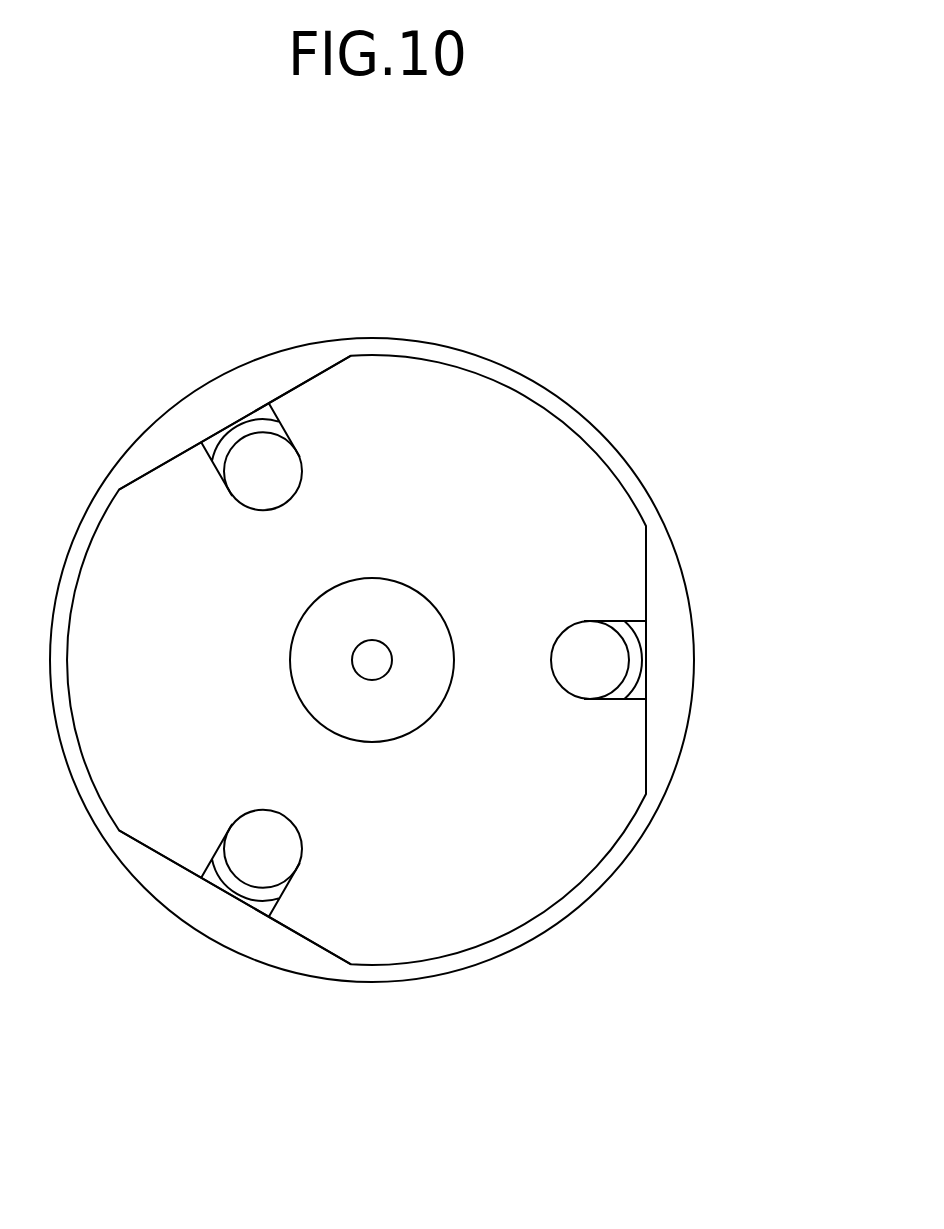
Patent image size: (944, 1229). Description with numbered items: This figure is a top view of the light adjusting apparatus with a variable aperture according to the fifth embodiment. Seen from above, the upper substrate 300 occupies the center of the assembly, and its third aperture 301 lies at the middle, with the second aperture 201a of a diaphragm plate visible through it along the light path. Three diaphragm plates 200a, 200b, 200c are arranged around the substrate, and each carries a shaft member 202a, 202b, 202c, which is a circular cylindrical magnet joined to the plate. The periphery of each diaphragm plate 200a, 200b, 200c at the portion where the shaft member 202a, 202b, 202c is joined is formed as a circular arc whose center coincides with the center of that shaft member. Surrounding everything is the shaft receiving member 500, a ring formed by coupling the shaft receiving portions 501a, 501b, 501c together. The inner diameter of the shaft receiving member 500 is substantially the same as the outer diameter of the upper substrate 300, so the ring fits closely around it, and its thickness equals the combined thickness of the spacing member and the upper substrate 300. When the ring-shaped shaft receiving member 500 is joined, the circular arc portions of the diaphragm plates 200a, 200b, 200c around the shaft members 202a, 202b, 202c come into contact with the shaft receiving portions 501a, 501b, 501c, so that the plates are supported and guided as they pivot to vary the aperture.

The upper substrate 300 is at (472, 430).
The third aperture 301 is at (380, 577).
The second aperture 201a is at (390, 672).
The shaft receiving member 500 is at (582, 417).
The shaft receiving portion 501a is at (647, 632).
The shaft receiving portion 501b is at (250, 872).
The shaft receiving portion 501c is at (252, 452).
The shaft member 202a is at (603, 657).
The shaft member 202b is at (245, 902).
The shaft member 202c is at (240, 420).
The diaphragm plate 200a is at (637, 687).
The diaphragm plate 200b is at (217, 882).
The diaphragm plate 200c is at (215, 433).